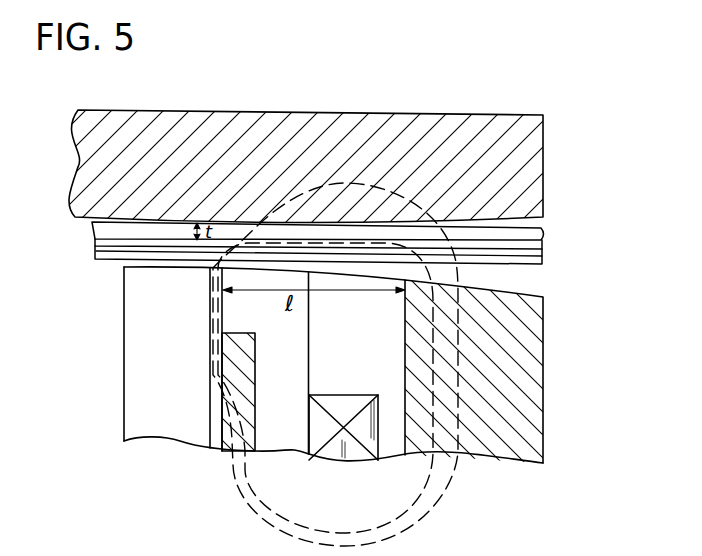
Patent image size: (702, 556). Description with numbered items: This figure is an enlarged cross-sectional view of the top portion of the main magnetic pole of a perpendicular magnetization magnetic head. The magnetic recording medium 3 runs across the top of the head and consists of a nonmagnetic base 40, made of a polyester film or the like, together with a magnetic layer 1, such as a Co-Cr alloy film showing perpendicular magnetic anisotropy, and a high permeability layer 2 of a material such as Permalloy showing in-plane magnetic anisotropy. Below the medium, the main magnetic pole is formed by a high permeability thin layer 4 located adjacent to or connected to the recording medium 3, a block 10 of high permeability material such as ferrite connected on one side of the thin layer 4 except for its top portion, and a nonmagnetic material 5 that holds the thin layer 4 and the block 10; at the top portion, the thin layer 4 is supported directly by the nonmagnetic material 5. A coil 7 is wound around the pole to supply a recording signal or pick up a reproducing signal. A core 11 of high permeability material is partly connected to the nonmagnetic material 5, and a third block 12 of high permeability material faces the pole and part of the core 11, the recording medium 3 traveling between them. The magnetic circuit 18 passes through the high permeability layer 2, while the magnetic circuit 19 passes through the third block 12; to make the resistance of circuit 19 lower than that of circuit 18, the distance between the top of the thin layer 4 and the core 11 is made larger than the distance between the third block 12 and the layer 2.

The magnetic layer 1 is at (546, 263).
The high permeability layer 2 is at (545, 248).
The magnetic recording medium 3 is at (354, 242).
The high permeability thin layer 4 is at (212, 338).
The nonmagnetic material 5 is at (175, 423).
The coil 7 is at (342, 403).
The block 10 is at (240, 378).
The core 11 is at (531, 360).
The third block 12 is at (366, 125).
The magnetic circuit 18 is at (417, 500).
The magnetic circuit 19 is at (443, 482).
The nonmagnetic base 40 is at (544, 230).